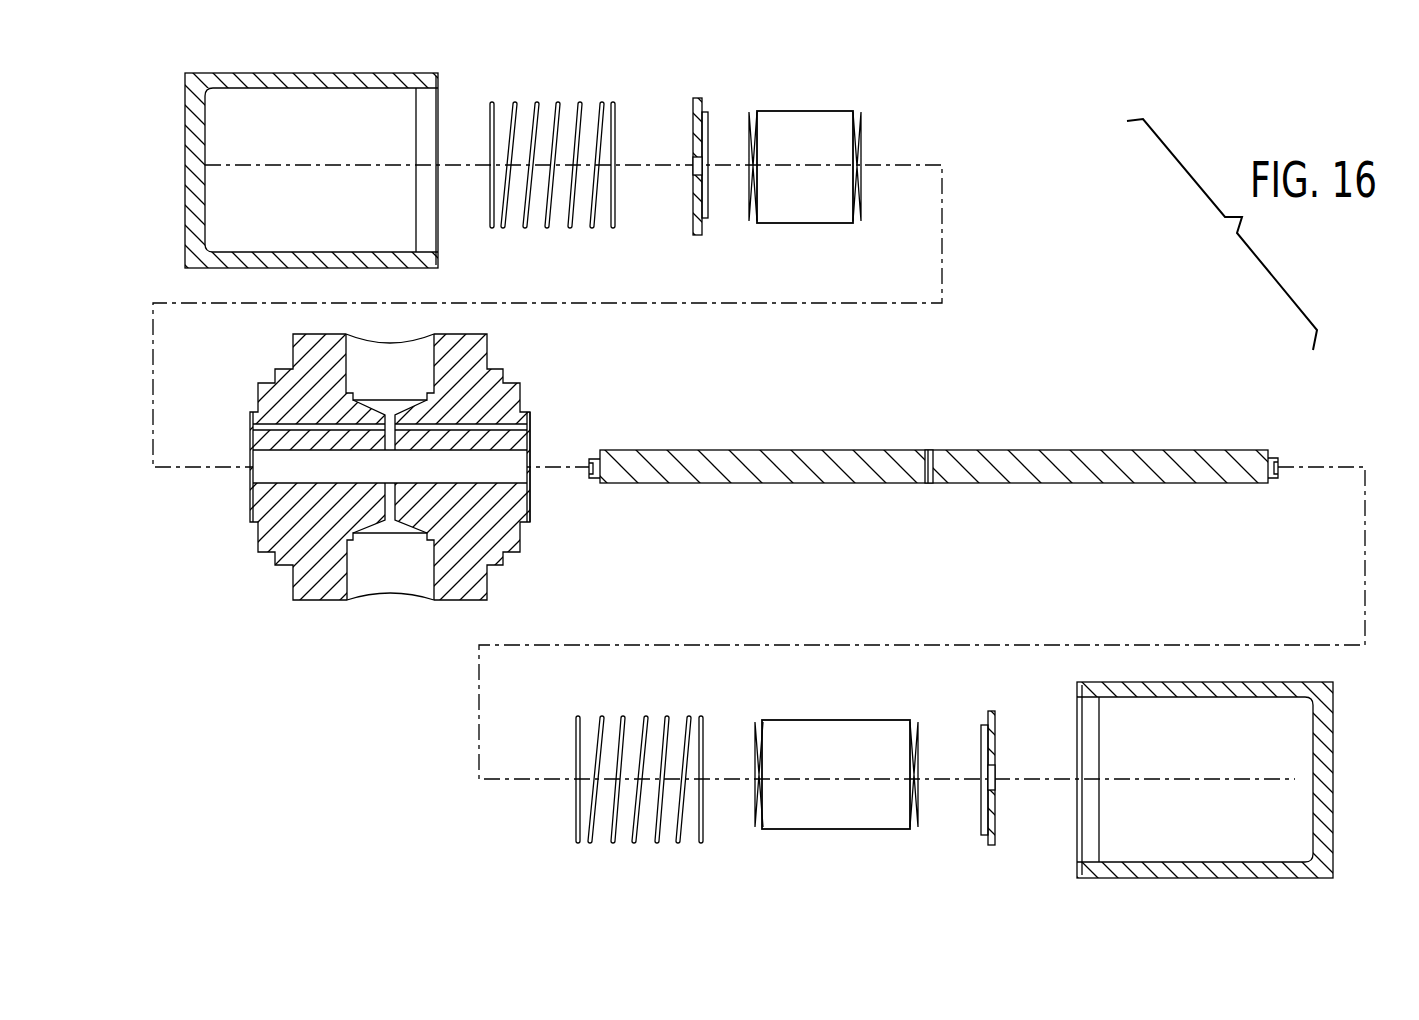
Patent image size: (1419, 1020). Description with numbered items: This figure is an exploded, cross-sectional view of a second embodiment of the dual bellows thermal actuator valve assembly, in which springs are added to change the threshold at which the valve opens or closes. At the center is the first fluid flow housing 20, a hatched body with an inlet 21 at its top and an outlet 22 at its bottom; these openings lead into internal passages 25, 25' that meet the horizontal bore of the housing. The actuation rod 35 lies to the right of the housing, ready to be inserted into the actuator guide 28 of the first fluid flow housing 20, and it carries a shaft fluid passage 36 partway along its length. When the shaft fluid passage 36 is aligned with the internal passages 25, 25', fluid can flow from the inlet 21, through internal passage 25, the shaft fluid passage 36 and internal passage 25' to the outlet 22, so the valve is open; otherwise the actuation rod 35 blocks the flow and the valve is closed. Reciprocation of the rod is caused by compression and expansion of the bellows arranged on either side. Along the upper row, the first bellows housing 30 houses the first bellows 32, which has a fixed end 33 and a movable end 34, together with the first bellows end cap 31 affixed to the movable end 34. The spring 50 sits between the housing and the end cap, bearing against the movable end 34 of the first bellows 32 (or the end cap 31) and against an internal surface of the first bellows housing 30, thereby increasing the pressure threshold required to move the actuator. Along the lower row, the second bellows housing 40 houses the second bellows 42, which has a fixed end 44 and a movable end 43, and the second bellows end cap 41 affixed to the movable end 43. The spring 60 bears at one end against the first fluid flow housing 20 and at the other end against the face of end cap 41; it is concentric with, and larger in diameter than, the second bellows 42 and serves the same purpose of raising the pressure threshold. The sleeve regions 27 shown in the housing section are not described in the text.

The first fluid flow housing 20 is at (404, 482).
The inlet 21 is at (388, 347).
The outlet 22 is at (392, 575).
The internal passage 25 is at (475, 426).
The internal passage 25' is at (370, 572).
The sleeve 27 is at (293, 430).
The actuator guide 28 is at (517, 477).
The first bellows housing 30 is at (197, 125).
The first bellows end cap 31 is at (690, 130).
The first bellows 32 is at (793, 130).
The fixed end 33 is at (860, 140).
The movable end 34 is at (752, 137).
The actuation rod 35 is at (933, 440).
The shaft fluid passage 36 is at (930, 462).
The second bellows housing 40 is at (1322, 800).
The second bellows end cap 41 is at (992, 822).
The second bellows 42 is at (847, 817).
The movable end 43 is at (916, 815).
The fixed end 44 is at (758, 812).
The spring 50 is at (558, 102).
The spring 60 is at (634, 843).